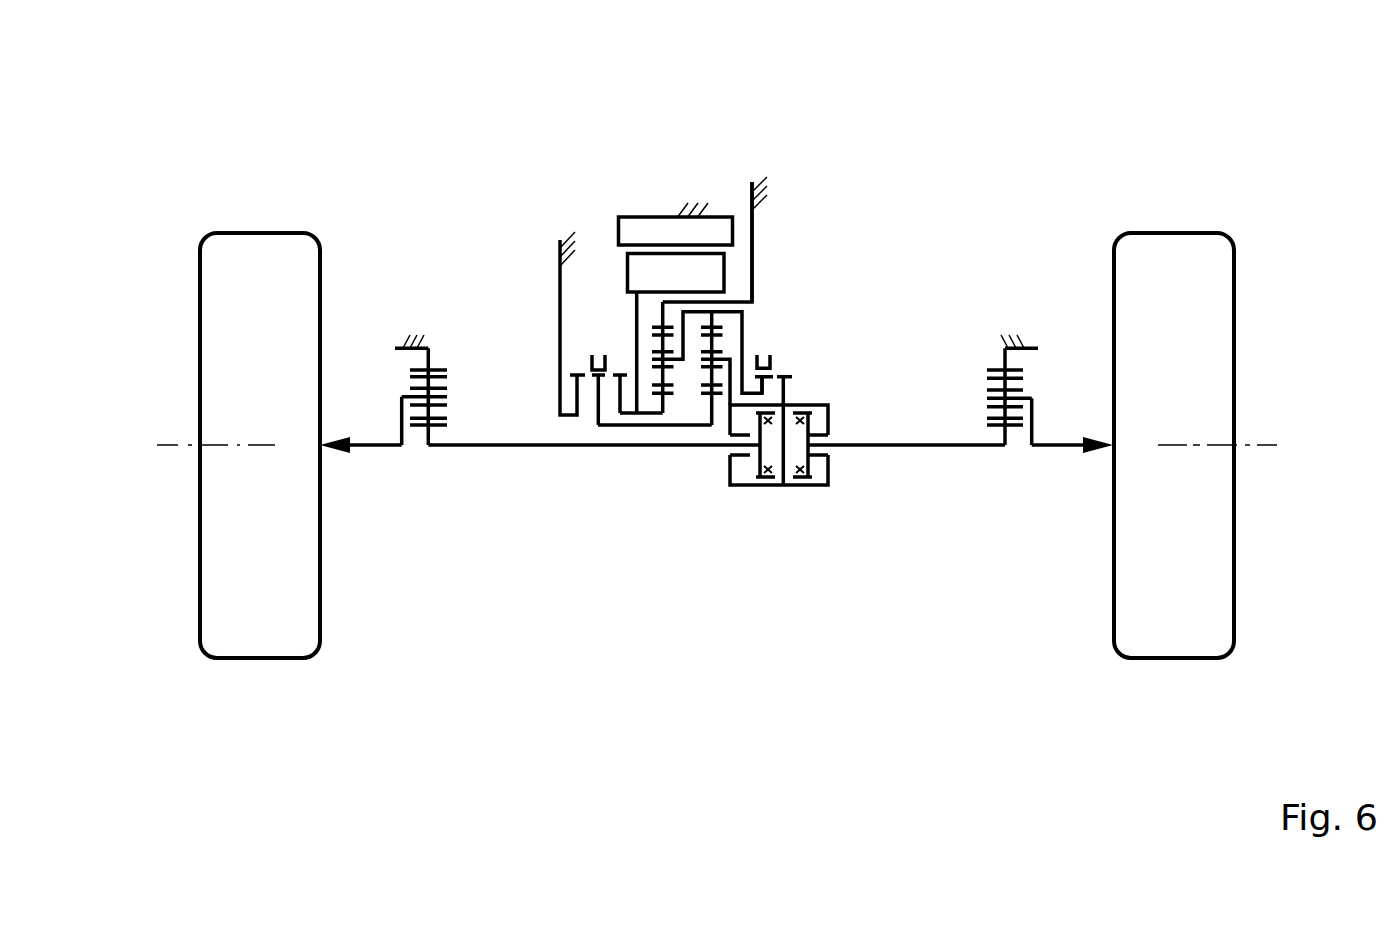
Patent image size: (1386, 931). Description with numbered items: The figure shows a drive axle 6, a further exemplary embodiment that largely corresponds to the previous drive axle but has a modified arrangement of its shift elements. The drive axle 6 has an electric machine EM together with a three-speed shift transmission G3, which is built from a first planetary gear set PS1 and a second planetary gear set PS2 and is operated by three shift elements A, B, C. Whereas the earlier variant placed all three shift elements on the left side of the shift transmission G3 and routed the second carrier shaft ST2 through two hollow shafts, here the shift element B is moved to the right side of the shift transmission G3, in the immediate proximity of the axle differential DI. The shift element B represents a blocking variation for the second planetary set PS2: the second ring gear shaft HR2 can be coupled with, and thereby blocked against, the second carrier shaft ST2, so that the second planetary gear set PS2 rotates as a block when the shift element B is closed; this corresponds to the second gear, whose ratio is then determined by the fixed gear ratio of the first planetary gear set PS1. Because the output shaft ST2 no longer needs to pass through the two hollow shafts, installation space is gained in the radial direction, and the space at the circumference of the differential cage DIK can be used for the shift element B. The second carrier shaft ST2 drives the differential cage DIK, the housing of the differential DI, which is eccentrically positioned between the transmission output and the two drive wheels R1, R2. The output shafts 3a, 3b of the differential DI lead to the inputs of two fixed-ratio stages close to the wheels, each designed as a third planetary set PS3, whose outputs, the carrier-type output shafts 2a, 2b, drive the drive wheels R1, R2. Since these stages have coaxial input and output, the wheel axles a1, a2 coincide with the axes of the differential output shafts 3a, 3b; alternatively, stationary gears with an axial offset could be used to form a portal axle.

The electric machine EM is at (658, 195).
The second ring gear shaft HR2 is at (745, 333).
The drive axle 6 is at (881, 214).
The differential cage DIK is at (815, 403).
The shift element A is at (592, 377).
The shift element B is at (773, 361).
The shift element C is at (615, 371).
The first planetary gear set PS1 is at (663, 469).
The second planetary gear set PS2 is at (729, 401).
The third planetary set PS3 is at (428, 469).
The three-speed shift transmission G3 is at (679, 639).
The second carrier shaft ST2 is at (736, 398).
The axle differential DI is at (801, 515).
The drive wheel R1 is at (282, 637).
The drive wheel R2 is at (1150, 637).
The wheel axle a1 is at (178, 445).
The wheel axle a2 is at (1258, 447).
The output shaft 2a is at (372, 447).
The output shaft of the differential 3a is at (473, 447).
The output shaft 2b is at (1060, 447).
The output shaft of the differential 3b is at (913, 447).